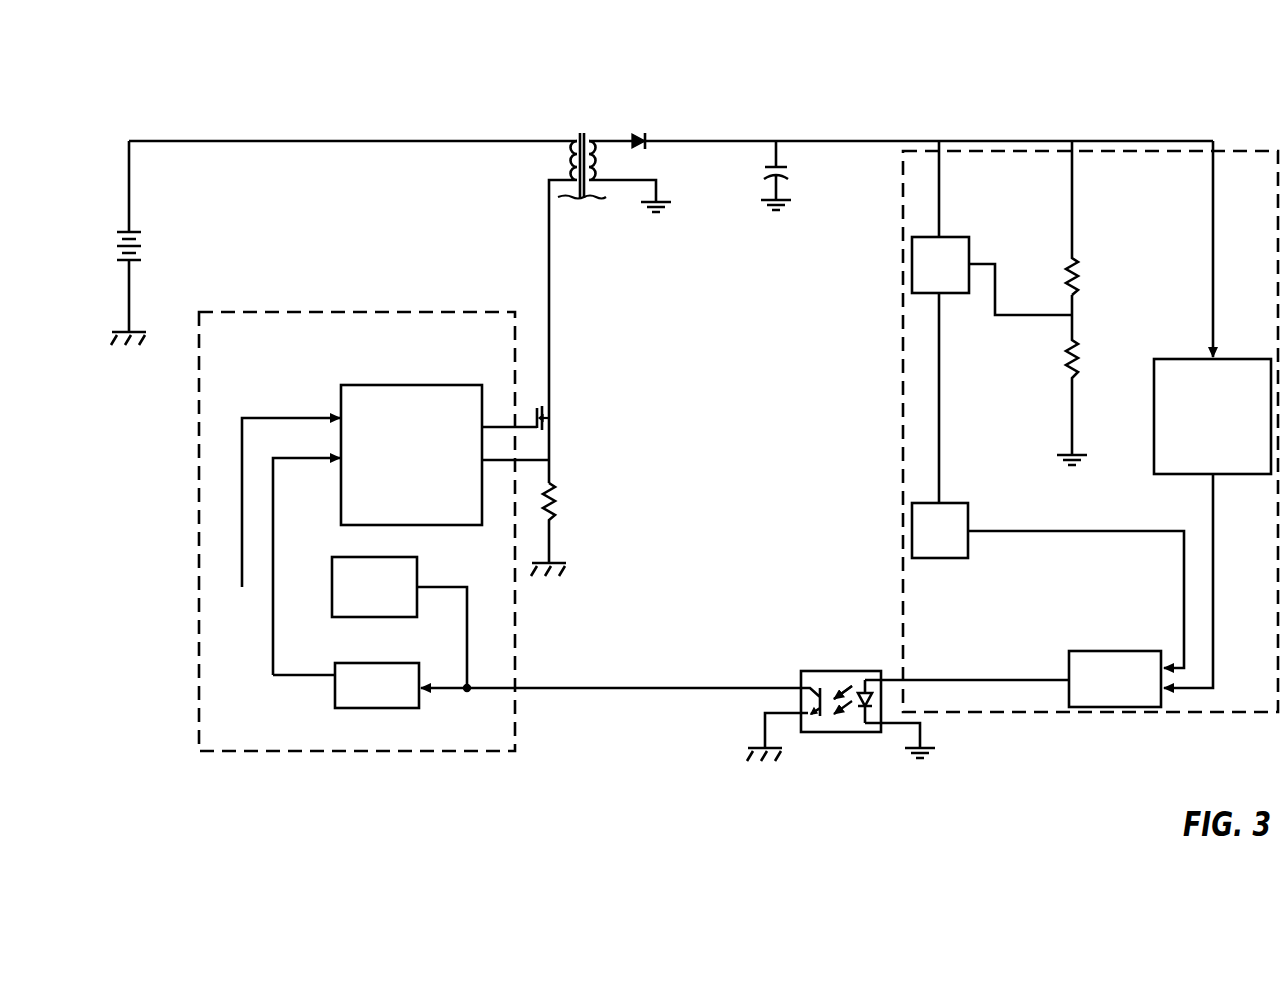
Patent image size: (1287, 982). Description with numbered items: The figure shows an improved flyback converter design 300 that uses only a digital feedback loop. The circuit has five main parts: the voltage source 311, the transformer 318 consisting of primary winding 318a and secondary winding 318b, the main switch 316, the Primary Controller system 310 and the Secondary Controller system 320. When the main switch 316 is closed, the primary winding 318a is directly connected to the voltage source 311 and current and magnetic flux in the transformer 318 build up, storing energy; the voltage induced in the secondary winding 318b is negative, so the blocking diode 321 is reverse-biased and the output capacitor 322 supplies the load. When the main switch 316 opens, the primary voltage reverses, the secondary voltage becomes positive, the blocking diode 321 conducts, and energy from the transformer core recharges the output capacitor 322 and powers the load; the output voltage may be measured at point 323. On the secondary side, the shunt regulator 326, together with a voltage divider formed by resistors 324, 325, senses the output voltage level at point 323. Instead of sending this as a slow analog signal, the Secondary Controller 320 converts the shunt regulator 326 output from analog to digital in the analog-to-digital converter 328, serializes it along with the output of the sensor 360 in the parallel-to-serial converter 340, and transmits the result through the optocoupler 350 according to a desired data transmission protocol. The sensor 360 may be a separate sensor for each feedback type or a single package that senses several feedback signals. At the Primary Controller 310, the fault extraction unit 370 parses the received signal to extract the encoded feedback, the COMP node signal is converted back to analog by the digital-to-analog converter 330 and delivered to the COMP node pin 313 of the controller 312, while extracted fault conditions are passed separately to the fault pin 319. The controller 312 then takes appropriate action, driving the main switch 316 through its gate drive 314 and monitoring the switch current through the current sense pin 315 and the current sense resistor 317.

The flyback converter design 300 is at (220, 70).
The voltage source 311 is at (163, 226).
The primary winding 318a is at (574, 132).
The secondary winding 318b is at (590, 132).
The transformer 318 is at (583, 204).
The blocking diode 321 is at (654, 124).
The output capacitor 322 is at (786, 148).
The output voltage point 323 is at (1186, 112).
The shunt regulator 326 is at (953, 226).
The voltage divider resistor 324 is at (1078, 256).
The voltage divider resistor 325 is at (1078, 340).
The sensor 360 is at (1197, 355).
The analog-to-digital converter 328 is at (951, 494).
The parallel-to-serial converter 340 is at (1101, 648).
The optocoupler 350 is at (819, 667).
The Secondary Controller system 320 is at (1040, 714).
The Primary Controller system 310 is at (235, 754).
The controller 312 is at (351, 380).
The gate drive 314 is at (403, 412).
The COMP node pin 313 is at (357, 472).
The current sense pin 315 is at (471, 470).
The main switch 316 is at (556, 382).
The current sense resistor 317 is at (567, 484).
The fault pin 319 is at (331, 412).
The fault extraction unit 370 is at (351, 553).
The digital-to-analog converter 330 is at (362, 660).